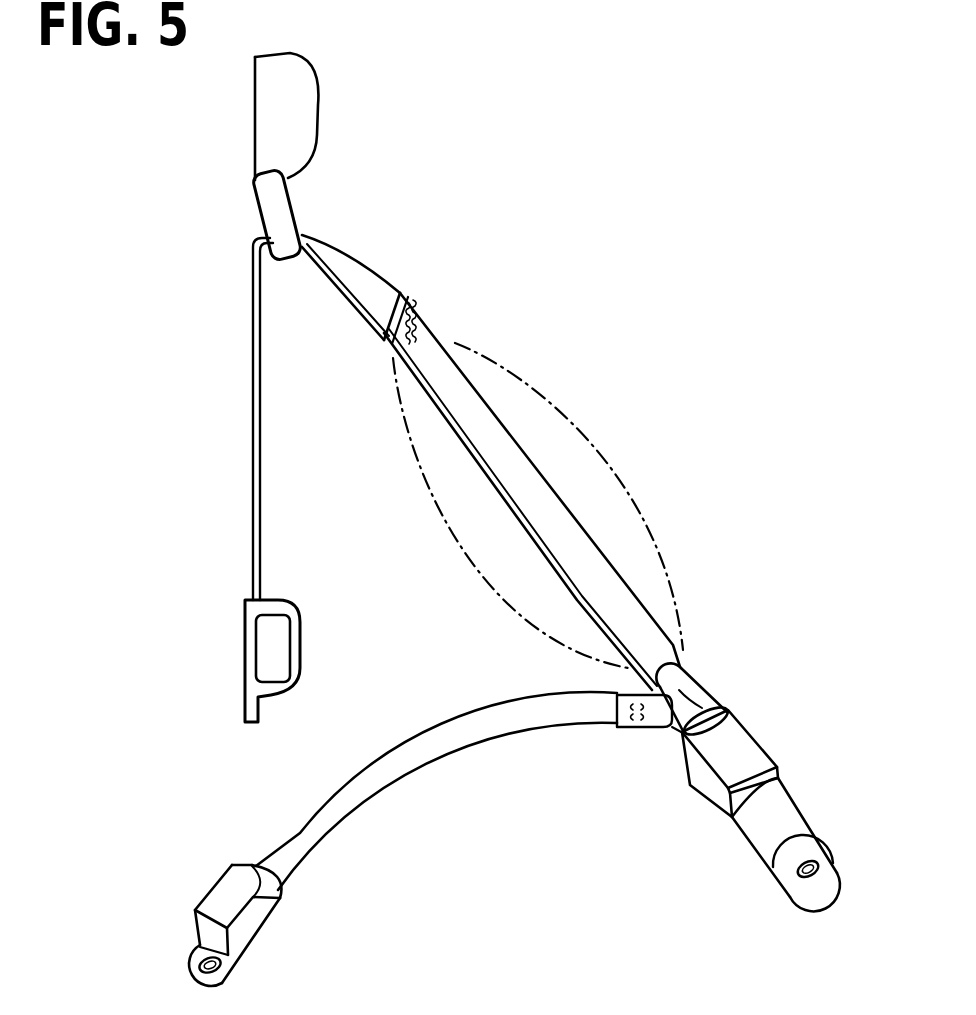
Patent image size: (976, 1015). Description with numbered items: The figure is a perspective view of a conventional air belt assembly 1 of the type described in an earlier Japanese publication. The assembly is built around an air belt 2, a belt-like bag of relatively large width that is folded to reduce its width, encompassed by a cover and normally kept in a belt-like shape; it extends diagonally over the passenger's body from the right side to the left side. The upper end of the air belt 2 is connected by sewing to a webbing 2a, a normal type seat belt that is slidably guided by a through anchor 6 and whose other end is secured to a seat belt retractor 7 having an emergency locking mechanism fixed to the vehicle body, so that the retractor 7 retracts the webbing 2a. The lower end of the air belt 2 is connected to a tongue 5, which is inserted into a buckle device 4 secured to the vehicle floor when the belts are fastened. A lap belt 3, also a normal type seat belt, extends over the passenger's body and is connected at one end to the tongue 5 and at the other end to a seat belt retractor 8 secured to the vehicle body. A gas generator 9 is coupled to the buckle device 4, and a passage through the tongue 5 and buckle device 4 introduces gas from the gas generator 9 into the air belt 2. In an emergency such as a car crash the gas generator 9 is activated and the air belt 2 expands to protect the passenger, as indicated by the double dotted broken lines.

The air belt assembly 1 is at (630, 332).
The air belt 2 is at (568, 538).
The webbing 2a is at (372, 285).
The lap belt 3 is at (408, 758).
The buckle device 4 is at (742, 742).
The tongue 5 is at (677, 678).
The through anchor 6 is at (288, 210).
The seat belt retractor 7 is at (267, 638).
The seat belt retractor 8 is at (250, 922).
The gas generator 9 is at (783, 820).